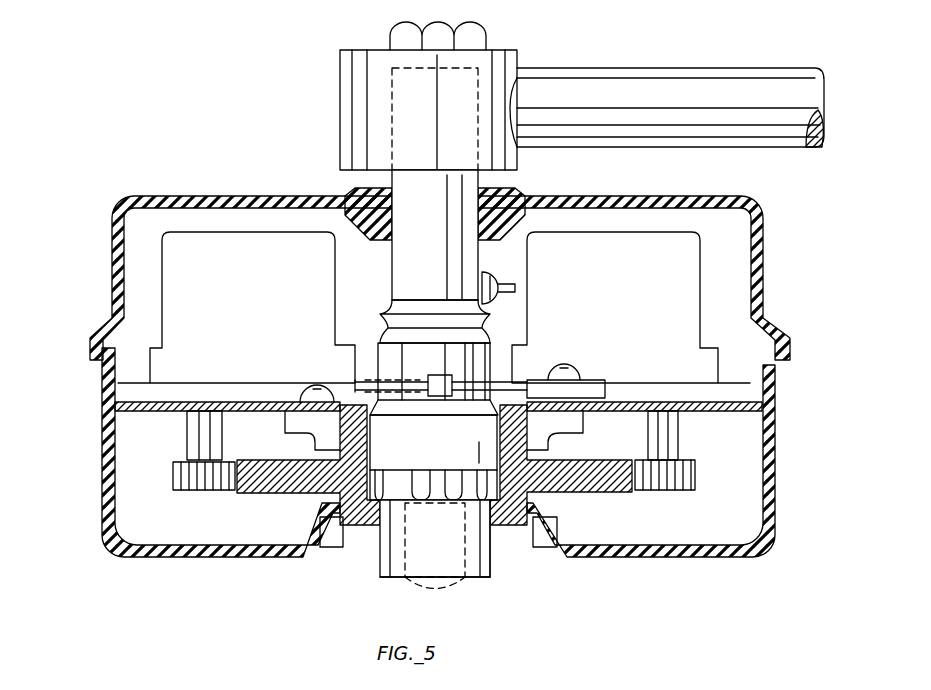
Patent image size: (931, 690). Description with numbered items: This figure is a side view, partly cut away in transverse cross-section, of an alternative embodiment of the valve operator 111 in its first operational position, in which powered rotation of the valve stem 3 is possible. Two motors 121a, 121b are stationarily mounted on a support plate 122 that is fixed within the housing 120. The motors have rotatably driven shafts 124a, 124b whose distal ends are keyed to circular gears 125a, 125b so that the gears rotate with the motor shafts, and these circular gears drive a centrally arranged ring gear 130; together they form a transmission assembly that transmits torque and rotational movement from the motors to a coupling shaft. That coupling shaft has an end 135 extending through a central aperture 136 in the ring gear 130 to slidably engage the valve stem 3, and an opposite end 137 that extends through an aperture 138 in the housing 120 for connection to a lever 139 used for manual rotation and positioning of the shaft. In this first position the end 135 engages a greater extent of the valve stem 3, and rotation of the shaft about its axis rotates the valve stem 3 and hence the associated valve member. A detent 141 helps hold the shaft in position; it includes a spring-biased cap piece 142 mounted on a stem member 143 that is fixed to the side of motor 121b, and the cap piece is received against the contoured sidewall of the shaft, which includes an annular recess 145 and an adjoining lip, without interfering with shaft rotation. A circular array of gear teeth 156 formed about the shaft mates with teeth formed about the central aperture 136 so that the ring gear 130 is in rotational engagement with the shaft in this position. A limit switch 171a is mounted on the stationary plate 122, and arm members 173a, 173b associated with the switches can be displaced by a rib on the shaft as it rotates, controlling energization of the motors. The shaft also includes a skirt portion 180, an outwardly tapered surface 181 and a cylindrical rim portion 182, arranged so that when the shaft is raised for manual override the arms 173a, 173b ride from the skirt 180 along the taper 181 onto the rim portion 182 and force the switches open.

The valve operator 111 is at (222, 131).
The housing 120 is at (772, 262).
The support plate 122 is at (777, 386).
The motor 121a is at (232, 272).
The motor 121b is at (680, 272).
The shaft 124a is at (200, 447).
The shaft 124b is at (675, 443).
The circular gear 125a is at (190, 492).
The circular gear 125b is at (662, 490).
The ring gear 130 is at (293, 495).
The end of coupling shaft 135 is at (480, 578).
The central aperture 136 is at (383, 575).
The opposite end of coupling shaft 137 is at (460, 72).
The aperture 138 is at (470, 197).
The lever 139 is at (628, 68).
The detent 141 is at (486, 258).
The spring-biased cap piece 142 is at (488, 292).
The stem member 143 is at (502, 305).
The annular recess 145 is at (492, 335).
The gear teeth 156 is at (433, 503).
The limit switch 171a is at (610, 393).
The arm member 173a is at (520, 378).
The arm member 173b is at (372, 378).
The skirt portion 180 is at (372, 345).
The outwardly tapered surface 181 is at (478, 424).
The cylindrical rim portion 182 is at (418, 459).
The valve stem 3 is at (502, 555).